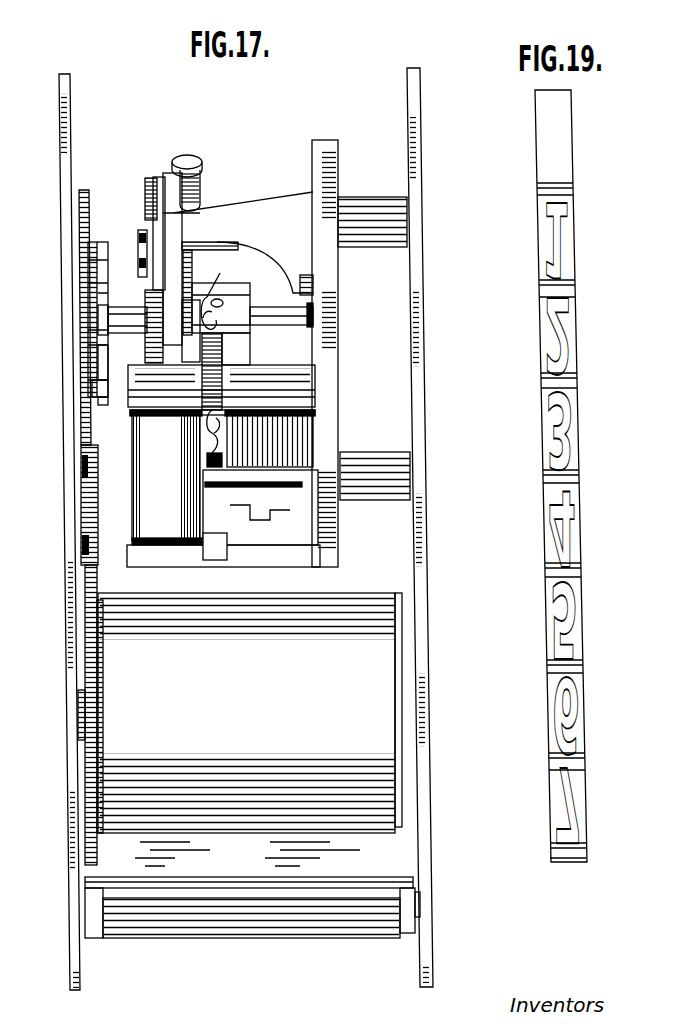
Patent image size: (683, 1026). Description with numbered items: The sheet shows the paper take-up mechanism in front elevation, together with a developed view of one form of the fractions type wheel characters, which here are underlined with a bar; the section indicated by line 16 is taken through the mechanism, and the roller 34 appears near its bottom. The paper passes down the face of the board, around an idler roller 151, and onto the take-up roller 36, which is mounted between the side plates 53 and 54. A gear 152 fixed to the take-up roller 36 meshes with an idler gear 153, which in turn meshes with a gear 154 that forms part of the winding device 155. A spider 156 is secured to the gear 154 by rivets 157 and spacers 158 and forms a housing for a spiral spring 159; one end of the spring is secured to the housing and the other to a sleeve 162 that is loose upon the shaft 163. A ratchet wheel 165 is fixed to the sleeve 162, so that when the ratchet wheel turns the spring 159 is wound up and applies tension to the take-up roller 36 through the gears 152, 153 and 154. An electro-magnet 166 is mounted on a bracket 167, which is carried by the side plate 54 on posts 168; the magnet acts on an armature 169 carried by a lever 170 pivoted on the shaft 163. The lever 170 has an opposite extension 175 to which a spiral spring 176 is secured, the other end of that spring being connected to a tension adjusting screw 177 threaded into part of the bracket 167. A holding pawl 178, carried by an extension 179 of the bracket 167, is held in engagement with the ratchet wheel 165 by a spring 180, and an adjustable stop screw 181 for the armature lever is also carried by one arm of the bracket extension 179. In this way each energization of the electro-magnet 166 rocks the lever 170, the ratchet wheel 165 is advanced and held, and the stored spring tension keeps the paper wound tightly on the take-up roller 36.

The section line 16- 16 is at (27, 36).
The roller 34 is at (289, 927).
The take-up roller 36 is at (392, 784).
The side plate 53 is at (72, 765).
The side plate 54 is at (426, 808).
The idler roller 151 is at (365, 895).
The gear 152 is at (91, 655).
The idler gear 153 is at (86, 530).
The gear 154 is at (82, 219).
The winding device 155 is at (120, 279).
The spider 156 is at (104, 352).
The rivets 157 is at (110, 391).
The spacers 158 is at (97, 405).
The spiral spring 159 is at (96, 321).
The sleeve 162 is at (124, 309).
The shaft 163 is at (266, 310).
The ratchet wheel 165 is at (150, 338).
The electro-magnet 166 is at (152, 508).
The bracket 167 is at (337, 521).
The posts 168 is at (403, 468).
The armature 169 is at (293, 383).
The lever 170 is at (238, 322).
The extension 175 is at (199, 328).
The spiral spring 176 is at (212, 373).
The tension adjusting screw 177 is at (208, 462).
The holding pawl 178 is at (147, 245).
The extension 179 is at (175, 211).
The spring 180 is at (146, 197).
The adjustable stop screw 181 is at (199, 183).